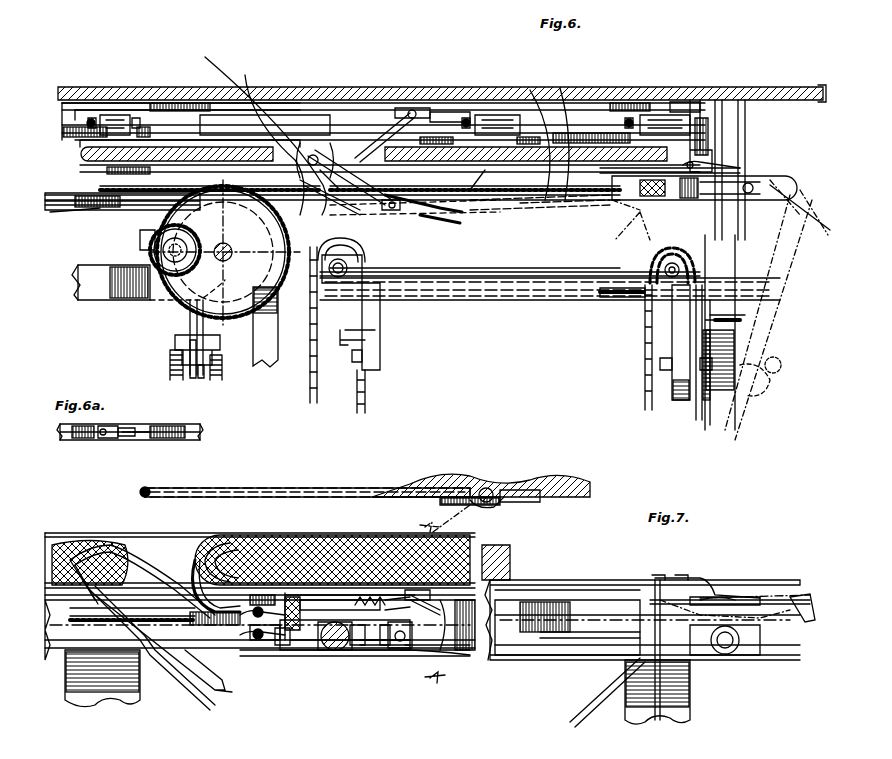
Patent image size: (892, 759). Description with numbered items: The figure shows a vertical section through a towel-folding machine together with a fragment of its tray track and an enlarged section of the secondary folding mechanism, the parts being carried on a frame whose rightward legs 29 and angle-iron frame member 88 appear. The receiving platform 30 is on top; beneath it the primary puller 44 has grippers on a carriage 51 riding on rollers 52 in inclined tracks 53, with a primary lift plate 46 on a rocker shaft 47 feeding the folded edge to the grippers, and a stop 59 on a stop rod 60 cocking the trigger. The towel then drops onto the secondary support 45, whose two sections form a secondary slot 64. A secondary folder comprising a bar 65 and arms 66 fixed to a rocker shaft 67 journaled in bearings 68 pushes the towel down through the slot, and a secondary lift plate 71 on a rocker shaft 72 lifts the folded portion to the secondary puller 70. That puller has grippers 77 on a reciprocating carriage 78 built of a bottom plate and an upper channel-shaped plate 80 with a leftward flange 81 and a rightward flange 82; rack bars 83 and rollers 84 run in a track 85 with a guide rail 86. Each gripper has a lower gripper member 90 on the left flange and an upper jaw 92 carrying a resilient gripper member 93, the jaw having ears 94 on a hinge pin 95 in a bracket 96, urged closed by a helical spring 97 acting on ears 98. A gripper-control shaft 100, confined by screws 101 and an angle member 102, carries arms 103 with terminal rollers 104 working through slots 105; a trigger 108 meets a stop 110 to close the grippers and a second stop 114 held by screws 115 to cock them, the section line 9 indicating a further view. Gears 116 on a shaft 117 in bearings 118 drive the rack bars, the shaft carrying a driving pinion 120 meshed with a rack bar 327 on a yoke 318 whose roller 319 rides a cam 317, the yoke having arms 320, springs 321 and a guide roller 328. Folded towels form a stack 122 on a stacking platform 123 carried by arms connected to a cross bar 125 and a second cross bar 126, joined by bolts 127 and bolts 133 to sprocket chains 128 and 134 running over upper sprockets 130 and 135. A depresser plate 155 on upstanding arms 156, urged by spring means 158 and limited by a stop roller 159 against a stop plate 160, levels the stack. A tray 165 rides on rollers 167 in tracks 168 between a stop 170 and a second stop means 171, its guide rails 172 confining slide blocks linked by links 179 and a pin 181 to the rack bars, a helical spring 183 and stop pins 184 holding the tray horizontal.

In FIG. 7, the section line 9 is at (445, 601).
In FIG. 7, the rightward pair of legs 29 is at (688, 700).
In FIG. 6, the receiving platform 30 is at (738, 98).
In FIG. 7, the receiving platform 30 is at (575, 490).
In FIG. 6, the primary puller 44 is at (155, 105).
In FIG. 6, the secondary support 45 is at (575, 125).
In FIG. 7, the secondary support 45 is at (527, 566).
In FIG. 6, the primary lift plate 46 is at (648, 112).
In FIG. 6, the rocker shaft 47 is at (660, 100).
In FIG. 6, the carriage 51 is at (180, 125).
In FIG. 6, the roller 52 is at (698, 150).
In FIG. 6, the track 53 is at (710, 135).
In FIG. 6, the stop 59 is at (720, 170).
In FIG. 6, the stop rod 60 is at (700, 164).
In FIG. 6, the secondary slot 64 is at (305, 150).
In FIG. 7, the secondary slot 64 is at (152, 595).
In FIG. 6, the bar 65 is at (305, 200).
In FIG. 7, the bar 65 is at (210, 706).
In FIG. 6, the arms 66 is at (376, 140).
In FIG. 7, the arms 66 is at (430, 545).
In FIG. 6, the rocker shaft 67 is at (412, 108).
In FIG. 7, the rocker shaft 67 is at (487, 488).
In FIG. 6, the bearings 68 is at (450, 112).
In FIG. 7, the bearings 68 is at (520, 500).
In FIG. 6, the secondary puller 70 is at (617, 226).
In FIG. 6, the secondary lift plate 71 is at (257, 127).
In FIG. 7, the secondary lift plate 71 is at (180, 672).
In FIG. 6, the rocker shaft 72 is at (267, 138).
In FIG. 7, the rocker shaft 72 is at (95, 600).
In FIG. 6, the grippers 77 is at (603, 202).
In FIG. 7, the grippers 77 is at (208, 600).
In FIG. 7, the reciprocating carriage 78 is at (810, 665).
In FIG. 7, the upper channel-shaped plate 80 is at (440, 595).
In FIG. 7, the leftward flange 81 is at (265, 645).
In FIG. 7, the rightward flange 82 is at (400, 652).
In FIG. 6, the rack bars 83 is at (540, 110).
In FIG. 7, the rack bars 83 is at (140, 685).
In FIG. 7, the rollers 84 is at (745, 656).
In FIG. 6, the track 85 is at (780, 178).
In FIG. 7, the track 85 is at (530, 660).
In FIG. 7, the guide rail 86 is at (578, 655).
In FIG. 7, the angle-iron frame member 88 is at (595, 600).
In FIG. 7, the lower gripper member 90 is at (222, 695).
In FIG. 7, the upper jaw 92 is at (268, 595).
In FIG. 7, the resilient gripper member 93 is at (240, 580).
In FIG. 7, the ears 94 is at (385, 650).
In FIG. 7, the hinge pin 95 is at (414, 636).
In FIG. 7, the bracket 96 is at (405, 625).
In FIG. 7, the helical spring 97 is at (412, 590).
In FIG. 7, the ears 98 is at (808, 593).
In FIG. 7, the gripper-control shaft 100 is at (290, 648).
In FIG. 7, the screws 101 is at (285, 650).
In FIG. 7, the angle member 102 is at (358, 648).
In FIG. 7, the arm 103 is at (385, 648).
In FIG. 7, the terminal roller 104 is at (378, 600).
In FIG. 7, the slot 105 is at (295, 597).
In FIG. 7, the trigger 108 is at (350, 600).
In FIG. 7, the stop 110 is at (320, 600).
In FIG. 7, the second stop 114 is at (715, 598).
In FIG. 7, the screws 115 is at (680, 580).
In FIG. 6, the gears 116 is at (160, 253).
In FIG. 6, the shaft 117 is at (175, 258).
In FIG. 6, the bearings 118 is at (150, 300).
In FIG. 6, the driving pinion 120 is at (172, 300).
In FIG. 6, the stack 122 is at (548, 280).
In FIG. 6, the stacking platform 123 is at (488, 290).
In FIG. 6, the cross bar 125 is at (378, 338).
In FIG. 6, the second cross bar 126 is at (665, 362).
In FIG. 6, the bolts 127 is at (355, 357).
In FIG. 6, the sprocket chains 128 is at (368, 385).
In FIG. 6, the upper sprockets 130 is at (362, 283).
In FIG. 6, the bolts 133 is at (648, 390).
In FIG. 6, the sprocket chains 134 is at (652, 400).
In FIG. 6, the upper sprockets 135 is at (662, 252).
In FIG. 6, the depresser plate 155 is at (720, 175).
In FIG. 6, the upstanding arms 156 is at (690, 223).
In FIG. 6, the spring means 158 is at (625, 315).
In FIG. 6, the stop roller 159 is at (760, 382).
In FIG. 6, the stop plate 160 is at (715, 395).
In FIG. 6, the tray 165 is at (342, 265).
In FIG. 6, the rollers 167 is at (68, 210).
In FIG. 6A, the rollers 167 is at (122, 440).
In FIG. 6, the tracks 168 is at (55, 195).
In FIG. 6A, the tracks 168 is at (150, 440).
In FIG. 6, the stop 170 is at (88, 158).
In FIG. 6A, the second stop means 171 is at (98, 436).
In FIG. 6, the guide rails 172 is at (340, 213).
In FIG. 6, the links 179 is at (392, 212).
In FIG. 6, the pin 181 is at (440, 205).
In FIG. 6, the helical spring 183 is at (500, 200).
In FIG. 6, the pins 184 is at (486, 130).
In FIG. 6, the cam 317 is at (193, 380).
In FIG. 6, the yoke 318 is at (164, 346).
In FIG. 6, the roller 319 is at (215, 360).
In FIG. 6, the arms 320 is at (203, 380).
In FIG. 6, the springs 321 is at (168, 372).
In FIG. 6, the rack bar 327 is at (200, 326).
In FIG. 6, the guide roller 328 is at (140, 231).